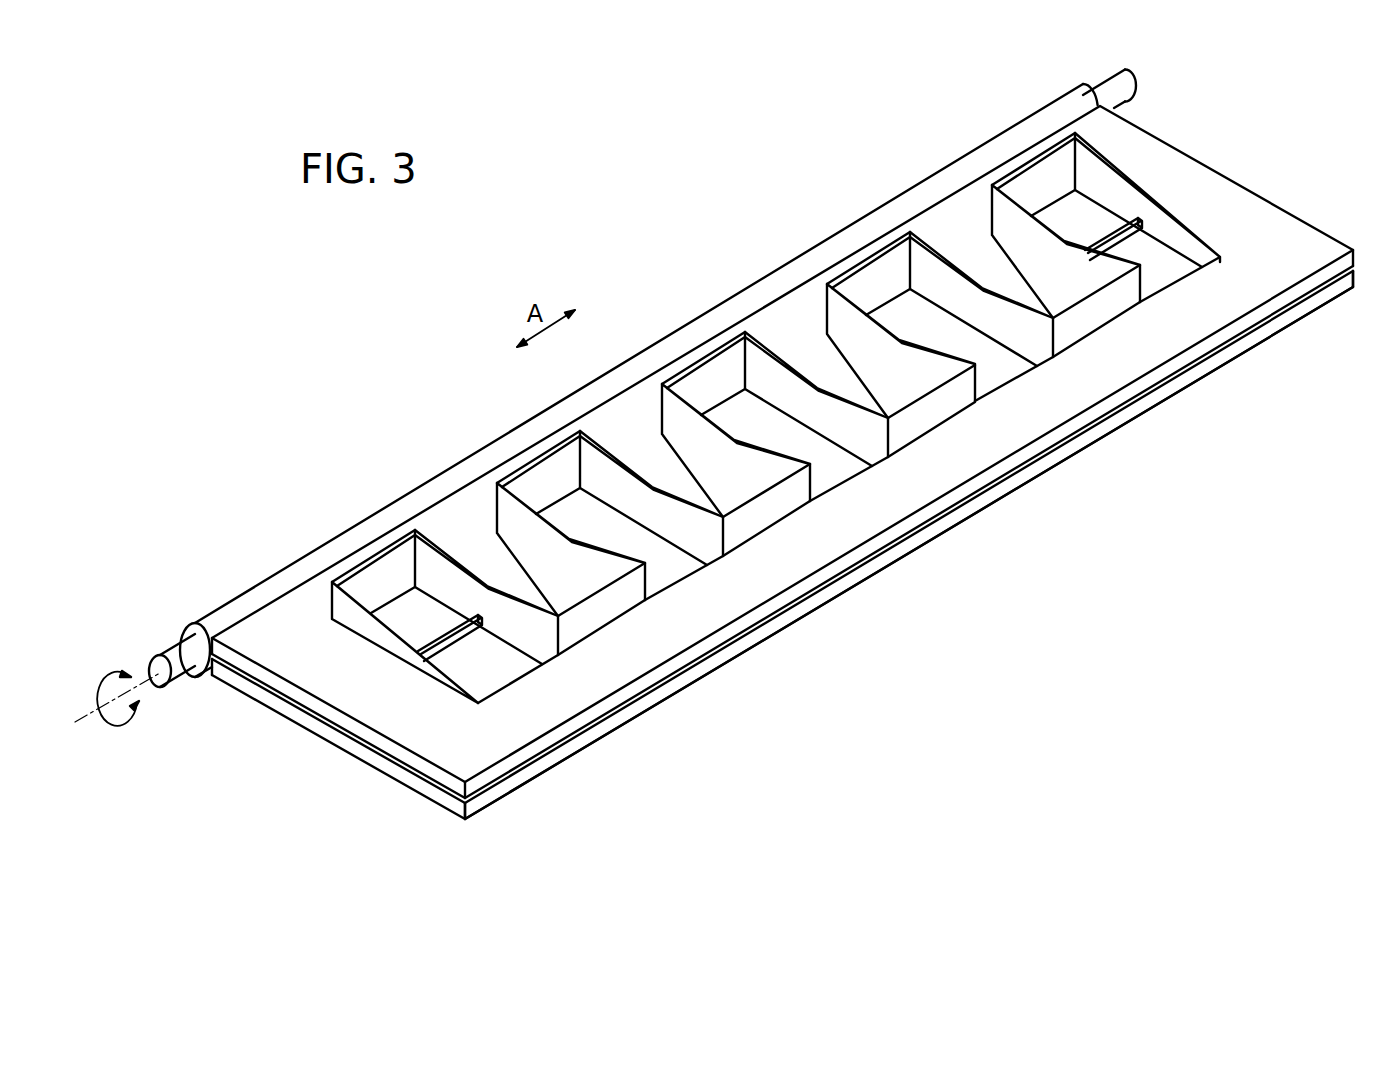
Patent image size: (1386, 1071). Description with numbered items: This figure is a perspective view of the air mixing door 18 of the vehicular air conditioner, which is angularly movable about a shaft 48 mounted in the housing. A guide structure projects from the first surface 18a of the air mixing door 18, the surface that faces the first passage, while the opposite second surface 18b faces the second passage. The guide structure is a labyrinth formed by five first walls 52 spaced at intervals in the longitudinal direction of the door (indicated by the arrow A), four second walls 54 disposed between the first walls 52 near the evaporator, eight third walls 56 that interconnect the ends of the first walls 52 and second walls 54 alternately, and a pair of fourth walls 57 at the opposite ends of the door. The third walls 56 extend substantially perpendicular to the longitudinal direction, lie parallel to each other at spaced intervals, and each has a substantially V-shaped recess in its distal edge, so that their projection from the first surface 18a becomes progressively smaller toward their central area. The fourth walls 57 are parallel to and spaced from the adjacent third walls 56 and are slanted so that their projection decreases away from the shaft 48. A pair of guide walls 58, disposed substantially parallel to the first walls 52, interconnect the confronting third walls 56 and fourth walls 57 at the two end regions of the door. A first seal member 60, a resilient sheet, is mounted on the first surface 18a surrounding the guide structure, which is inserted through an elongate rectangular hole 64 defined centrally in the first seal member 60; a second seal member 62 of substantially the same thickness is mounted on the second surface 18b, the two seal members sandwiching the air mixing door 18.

The air mixing door 18 is at (782, 464).
The first surface 18a is at (277, 682).
The second surface 18b is at (337, 733).
The shaft 48 is at (1127, 88).
The first walls 52 is at (385, 572).
The second walls 54 is at (590, 627).
The third walls 56 is at (503, 510).
The fourth walls 57 is at (375, 632).
The guide walls 58 is at (445, 647).
The first seal member 60 is at (1240, 300).
The second seal member 62 is at (525, 775).
The hole 64 is at (625, 603).